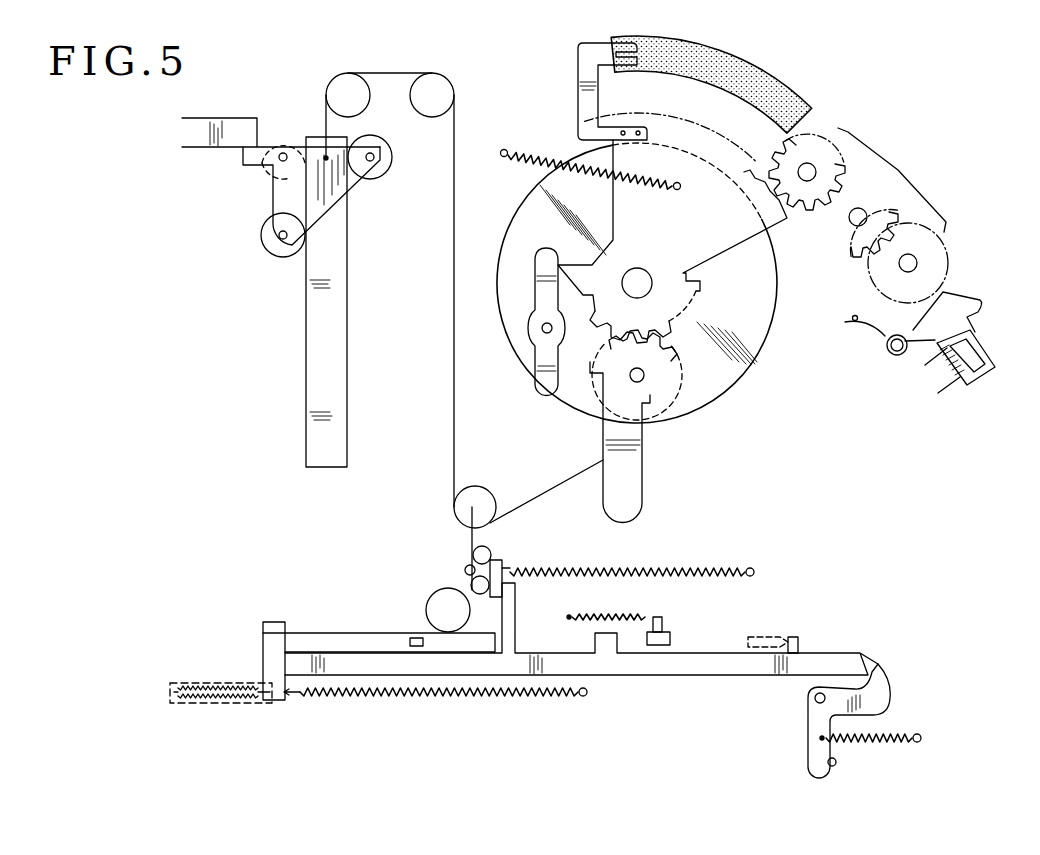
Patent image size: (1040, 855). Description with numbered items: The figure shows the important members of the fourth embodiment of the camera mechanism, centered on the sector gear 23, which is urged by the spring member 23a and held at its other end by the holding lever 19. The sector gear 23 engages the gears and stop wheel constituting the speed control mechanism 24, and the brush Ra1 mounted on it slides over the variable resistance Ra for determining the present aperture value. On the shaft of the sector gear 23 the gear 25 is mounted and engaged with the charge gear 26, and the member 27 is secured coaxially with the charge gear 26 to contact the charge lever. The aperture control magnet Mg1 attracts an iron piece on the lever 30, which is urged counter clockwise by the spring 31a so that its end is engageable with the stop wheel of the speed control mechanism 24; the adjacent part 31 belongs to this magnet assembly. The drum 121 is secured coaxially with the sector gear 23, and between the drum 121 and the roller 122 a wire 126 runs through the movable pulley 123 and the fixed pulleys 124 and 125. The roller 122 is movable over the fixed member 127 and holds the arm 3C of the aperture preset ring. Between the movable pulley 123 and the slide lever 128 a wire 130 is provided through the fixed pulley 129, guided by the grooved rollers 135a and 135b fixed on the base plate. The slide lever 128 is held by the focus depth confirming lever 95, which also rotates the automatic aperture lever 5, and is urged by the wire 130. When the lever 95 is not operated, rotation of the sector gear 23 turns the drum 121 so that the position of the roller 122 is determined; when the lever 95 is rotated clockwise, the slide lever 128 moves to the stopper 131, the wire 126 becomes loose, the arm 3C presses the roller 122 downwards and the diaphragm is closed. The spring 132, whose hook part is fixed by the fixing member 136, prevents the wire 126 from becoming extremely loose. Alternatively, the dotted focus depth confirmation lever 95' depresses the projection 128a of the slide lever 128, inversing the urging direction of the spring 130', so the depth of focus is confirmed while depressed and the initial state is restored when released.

The arm of the aperture preset ring 3C is at (236, 127).
The roller 122 is at (285, 192).
The fixed pulley 125 is at (335, 92).
The fixed pulley 124 is at (440, 92).
The wire 126 is at (453, 312).
The fixed member 127 is at (318, 396).
The movable pulley 123 is at (462, 505).
The drum 121 is at (763, 322).
The variable resistance Ra is at (782, 95).
The brush Ra1 is at (585, 63).
The spring member 23a is at (552, 152).
The sector gear 23 is at (737, 233).
The gear 25 is at (692, 296).
The charge gear 26 is at (672, 373).
The member secured coaxially with the charge gear 27 is at (603, 455).
The holding lever 19 is at (546, 396).
The speed control mechanism 24 is at (900, 174).
The lever 30 is at (955, 296).
The armature 31 is at (968, 338).
The spring 31a is at (856, 325).
The aperture control magnet Mg1 is at (973, 378).
The roller 135a is at (492, 553).
The roller 135b is at (468, 568).
The fixing member of the hook part 136 is at (504, 566).
The spring 132 is at (690, 567).
The wire 130 is at (425, 662).
The spring 130' is at (221, 716).
The stopper 131 is at (412, 637).
The fixed pulley 129 is at (440, 598).
The slide lever 128 is at (668, 668).
The projection of the slide lever 128a is at (800, 640).
The focus depth confirmation lever 95' is at (768, 620).
The automatic aperture lever 5 is at (665, 633).
The focus depth confirming lever 95 is at (842, 721).